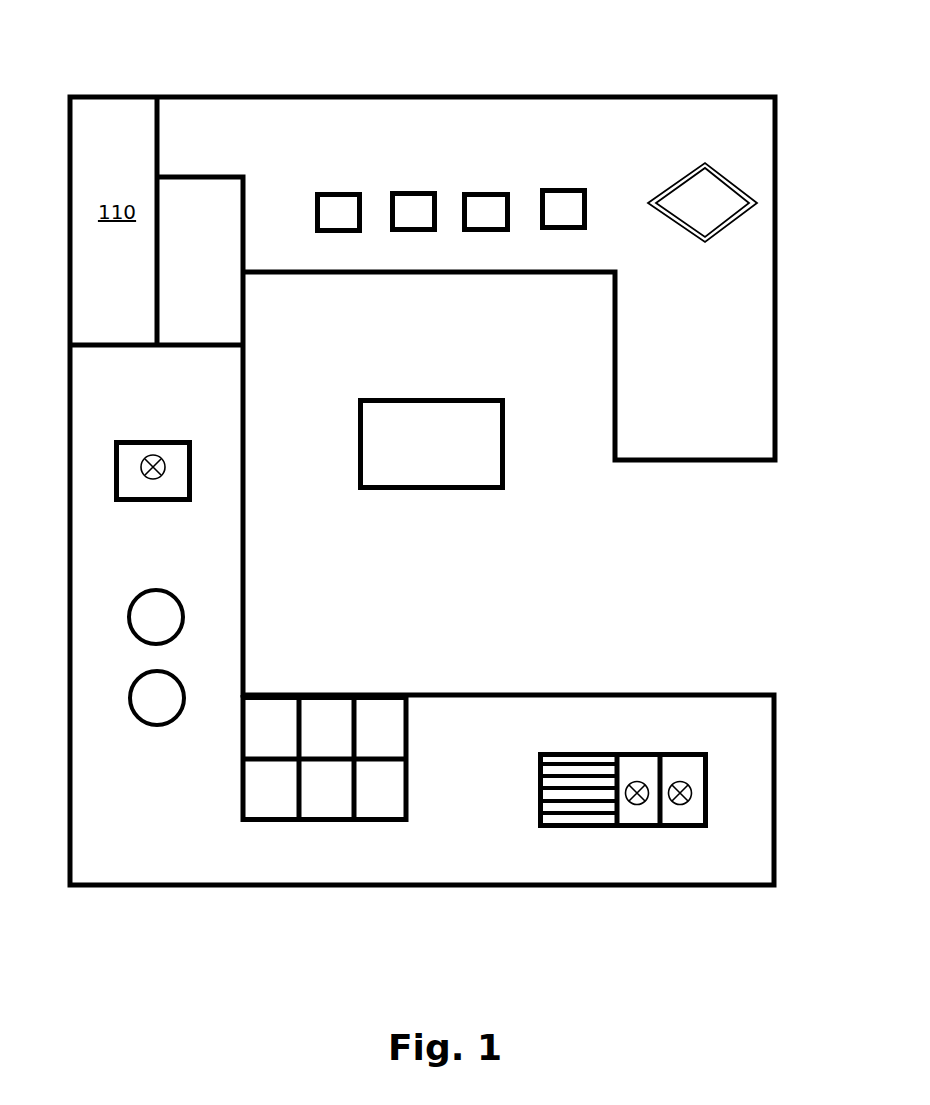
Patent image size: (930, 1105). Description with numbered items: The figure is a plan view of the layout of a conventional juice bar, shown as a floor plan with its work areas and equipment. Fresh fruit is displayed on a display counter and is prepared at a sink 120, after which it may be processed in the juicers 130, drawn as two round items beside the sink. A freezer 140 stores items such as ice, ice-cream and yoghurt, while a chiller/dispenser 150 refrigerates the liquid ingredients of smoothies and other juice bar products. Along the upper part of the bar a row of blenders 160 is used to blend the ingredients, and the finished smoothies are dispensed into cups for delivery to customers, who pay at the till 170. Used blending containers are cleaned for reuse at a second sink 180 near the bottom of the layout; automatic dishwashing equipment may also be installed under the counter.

The sink 120 is at (192, 457).
The juicers 130 is at (185, 697).
The freezer 140 is at (323, 723).
The chiller/dispenser 150 is at (432, 444).
The row of blenders 160 is at (565, 190).
The till 170 is at (702, 202).
The sink 180 is at (637, 752).